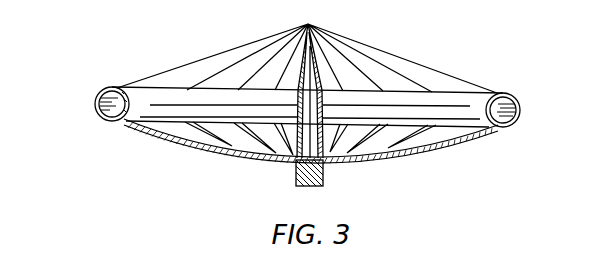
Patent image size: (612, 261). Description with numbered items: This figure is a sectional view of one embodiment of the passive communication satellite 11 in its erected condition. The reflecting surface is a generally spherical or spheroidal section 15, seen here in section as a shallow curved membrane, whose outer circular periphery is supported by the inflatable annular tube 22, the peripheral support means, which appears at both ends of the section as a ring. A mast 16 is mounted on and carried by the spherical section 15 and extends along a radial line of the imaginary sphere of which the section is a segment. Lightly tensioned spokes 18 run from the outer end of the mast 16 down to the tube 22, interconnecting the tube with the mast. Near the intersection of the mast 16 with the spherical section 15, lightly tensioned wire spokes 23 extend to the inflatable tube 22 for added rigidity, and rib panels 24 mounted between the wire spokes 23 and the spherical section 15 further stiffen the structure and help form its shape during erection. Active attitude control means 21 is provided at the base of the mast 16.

The passive communication satellite 11 is at (476, 140).
The spherical section 15 is at (135, 137).
The mast 16 is at (318, 56).
The spokes 18 is at (349, 55).
The active attitude control means 21 is at (323, 172).
The inflatable annular tube 22 is at (519, 104).
The wire spokes 23 is at (207, 135).
The rib panels 24 is at (213, 150).